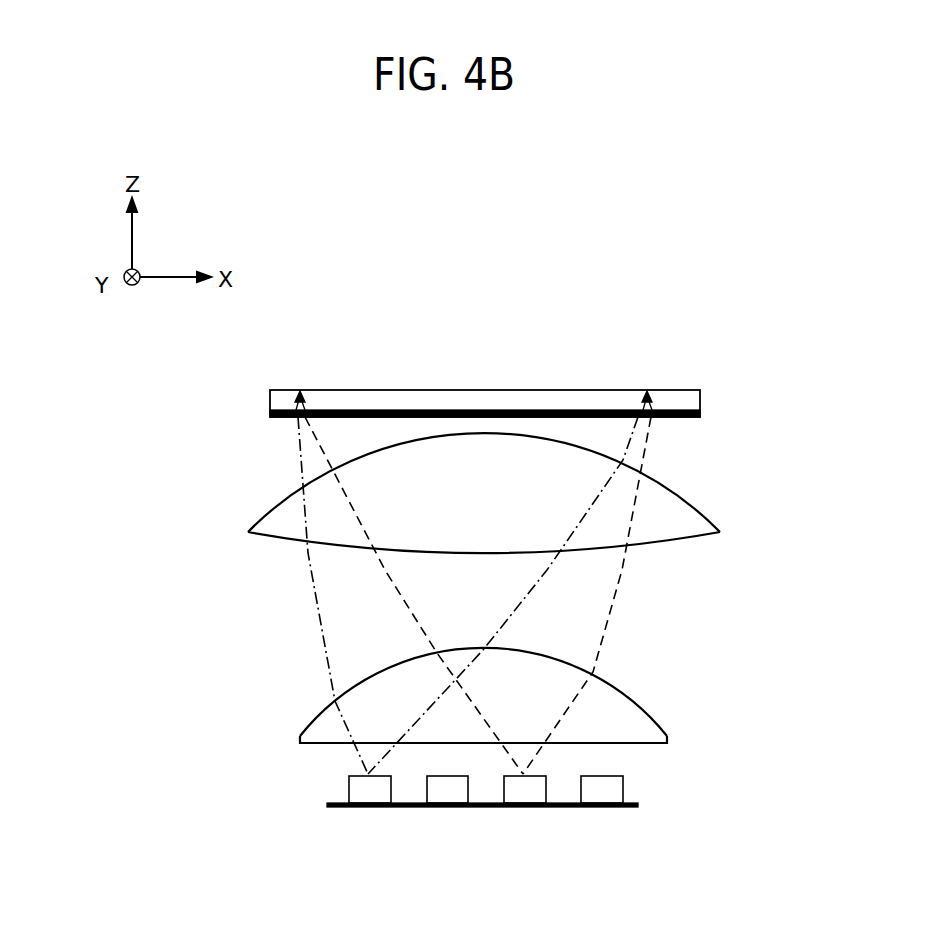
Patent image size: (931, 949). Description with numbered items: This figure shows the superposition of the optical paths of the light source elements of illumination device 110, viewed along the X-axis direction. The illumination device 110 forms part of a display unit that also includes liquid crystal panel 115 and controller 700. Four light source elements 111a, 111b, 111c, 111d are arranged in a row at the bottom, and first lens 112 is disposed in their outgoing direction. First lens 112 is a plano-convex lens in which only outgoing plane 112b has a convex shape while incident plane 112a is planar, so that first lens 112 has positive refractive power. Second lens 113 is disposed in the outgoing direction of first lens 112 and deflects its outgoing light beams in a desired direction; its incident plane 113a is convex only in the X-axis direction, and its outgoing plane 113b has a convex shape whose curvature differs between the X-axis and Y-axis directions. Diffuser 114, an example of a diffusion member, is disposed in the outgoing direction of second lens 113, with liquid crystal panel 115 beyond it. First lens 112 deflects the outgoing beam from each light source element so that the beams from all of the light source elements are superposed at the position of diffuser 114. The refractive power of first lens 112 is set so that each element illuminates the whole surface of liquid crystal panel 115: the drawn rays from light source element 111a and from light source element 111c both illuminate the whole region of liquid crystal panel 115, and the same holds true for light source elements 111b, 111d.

The illumination device 110 is at (100, 587).
The light source element 111a is at (349, 788).
The light source element 111b is at (427, 788).
The light source element 111c is at (546, 788).
The light source element 111d is at (623, 788).
The controller 700 is at (478, 808).
The first lens 112 is at (306, 722).
The incident plane 112a is at (655, 745).
The outgoing plane 112b is at (645, 710).
The second lens 113 is at (262, 509).
The incident plane 113a is at (702, 539).
The outgoing plane 113b is at (705, 510).
The diffuser 114 is at (270, 412).
The liquid crystal panel 115 is at (270, 392).